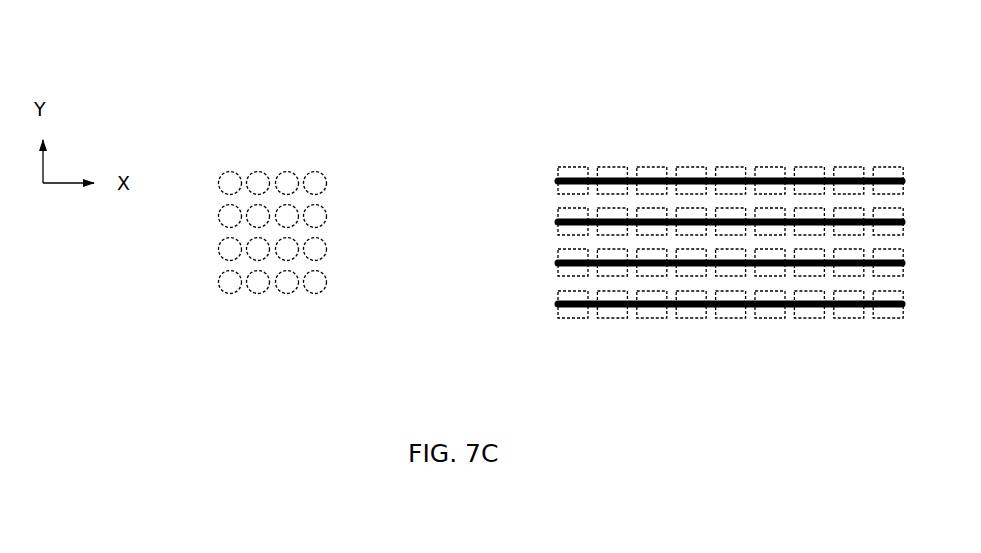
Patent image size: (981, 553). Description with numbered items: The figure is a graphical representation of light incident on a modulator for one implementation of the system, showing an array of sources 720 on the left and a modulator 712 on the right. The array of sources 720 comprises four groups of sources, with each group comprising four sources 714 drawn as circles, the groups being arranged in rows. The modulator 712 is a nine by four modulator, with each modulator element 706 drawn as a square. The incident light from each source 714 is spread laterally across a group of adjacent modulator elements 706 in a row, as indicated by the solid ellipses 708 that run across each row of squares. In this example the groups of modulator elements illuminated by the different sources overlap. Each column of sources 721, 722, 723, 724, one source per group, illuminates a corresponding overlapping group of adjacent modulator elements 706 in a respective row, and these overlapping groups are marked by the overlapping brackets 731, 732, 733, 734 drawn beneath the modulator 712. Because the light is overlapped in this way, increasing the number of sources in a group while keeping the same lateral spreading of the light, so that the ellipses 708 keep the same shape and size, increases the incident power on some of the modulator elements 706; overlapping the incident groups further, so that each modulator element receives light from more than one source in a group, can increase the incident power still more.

The modulator element 706 is at (560, 303).
The solid ellipse 708 is at (568, 181).
The modulator 712 is at (770, 148).
The source 714 is at (328, 286).
The array of sources 720 is at (298, 148).
The column of sources 721 is at (232, 295).
The column of sources 722 is at (260, 295).
The column of sources 723 is at (287, 295).
The column of sources 724 is at (317, 295).
The overlapping bracket 731 is at (557, 328).
The overlapping bracket 732 is at (637, 355).
The overlapping bracket 733 is at (713, 382).
The overlapping bracket 734 is at (795, 408).